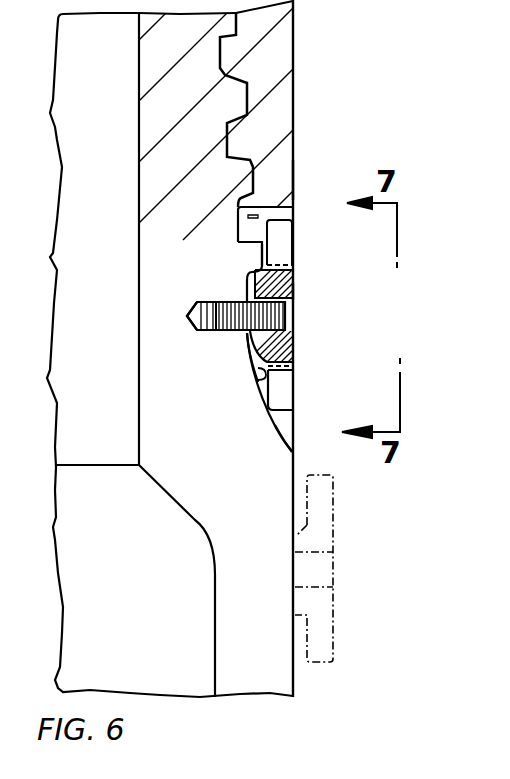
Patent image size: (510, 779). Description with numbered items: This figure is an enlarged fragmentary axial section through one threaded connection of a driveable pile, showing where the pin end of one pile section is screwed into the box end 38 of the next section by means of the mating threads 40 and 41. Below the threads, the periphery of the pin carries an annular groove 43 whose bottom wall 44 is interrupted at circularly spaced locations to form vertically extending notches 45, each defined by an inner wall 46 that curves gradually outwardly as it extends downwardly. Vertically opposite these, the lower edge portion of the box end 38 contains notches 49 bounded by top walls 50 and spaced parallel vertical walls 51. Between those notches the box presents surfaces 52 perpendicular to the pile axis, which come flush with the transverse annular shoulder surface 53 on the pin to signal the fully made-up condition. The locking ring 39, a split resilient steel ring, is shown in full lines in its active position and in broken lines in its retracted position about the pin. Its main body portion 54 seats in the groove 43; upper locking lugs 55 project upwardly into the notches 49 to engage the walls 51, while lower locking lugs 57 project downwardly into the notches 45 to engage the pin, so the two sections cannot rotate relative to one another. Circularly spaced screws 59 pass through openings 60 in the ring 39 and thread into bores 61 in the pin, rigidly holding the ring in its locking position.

The box end 38 is at (293, 133).
The locking ring 39 is at (292, 290).
The threads of the pin end 40 is at (250, 88).
The threads of the box end 41 is at (250, 88).
The annular groove 43 is at (242, 278).
The bottom wall of the groove 44 is at (288, 370).
The notches in the pin 45 is at (263, 380).
The inner wall of notch 46 is at (280, 438).
The notches in the box section 49 is at (292, 208).
The top walls of box notches 50 is at (293, 170).
The vertical walls of box notches 51 is at (252, 225).
The box surfaces 52 is at (297, 270).
The transverse annular shoulder surface 53 is at (262, 263).
The main body portion of the ring 54 is at (288, 343).
The upper locking lugs 55 is at (283, 240).
The lower locking lugs 57 is at (287, 394).
The screws 59 is at (283, 316).
The openings in ring 60 is at (252, 350).
The bores in pin section 61 is at (202, 333).